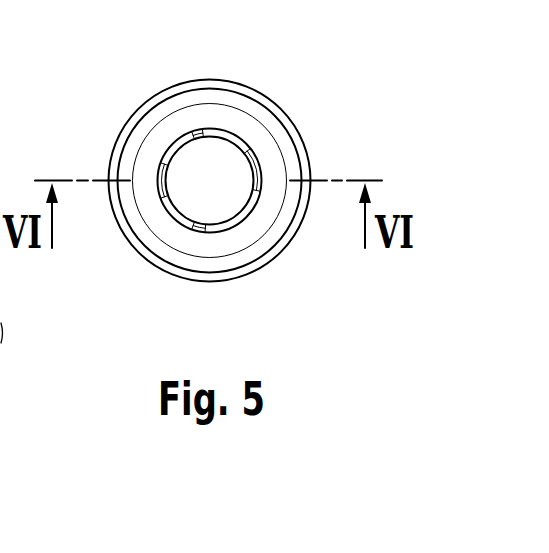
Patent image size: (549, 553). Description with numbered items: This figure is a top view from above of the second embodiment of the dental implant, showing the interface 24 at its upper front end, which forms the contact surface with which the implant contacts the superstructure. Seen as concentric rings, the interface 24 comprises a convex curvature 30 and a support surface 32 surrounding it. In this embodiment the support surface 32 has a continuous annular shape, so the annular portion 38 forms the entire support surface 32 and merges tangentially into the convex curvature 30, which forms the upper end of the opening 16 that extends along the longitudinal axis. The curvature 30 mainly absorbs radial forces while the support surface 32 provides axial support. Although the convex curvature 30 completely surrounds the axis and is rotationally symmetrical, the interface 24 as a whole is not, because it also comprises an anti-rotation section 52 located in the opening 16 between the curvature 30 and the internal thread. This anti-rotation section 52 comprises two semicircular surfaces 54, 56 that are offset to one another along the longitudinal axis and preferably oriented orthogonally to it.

The opening 16 is at (222, 195).
The interface 24 is at (281, 110).
The convex curvature 30 is at (268, 196).
The support surface 32 is at (234, 99).
The annular portion 38 is at (155, 243).
The anti-rotation section 52 is at (164, 126).
The semicircular surface 54 is at (209, 233).
The semicircular surface 56 is at (208, 131).